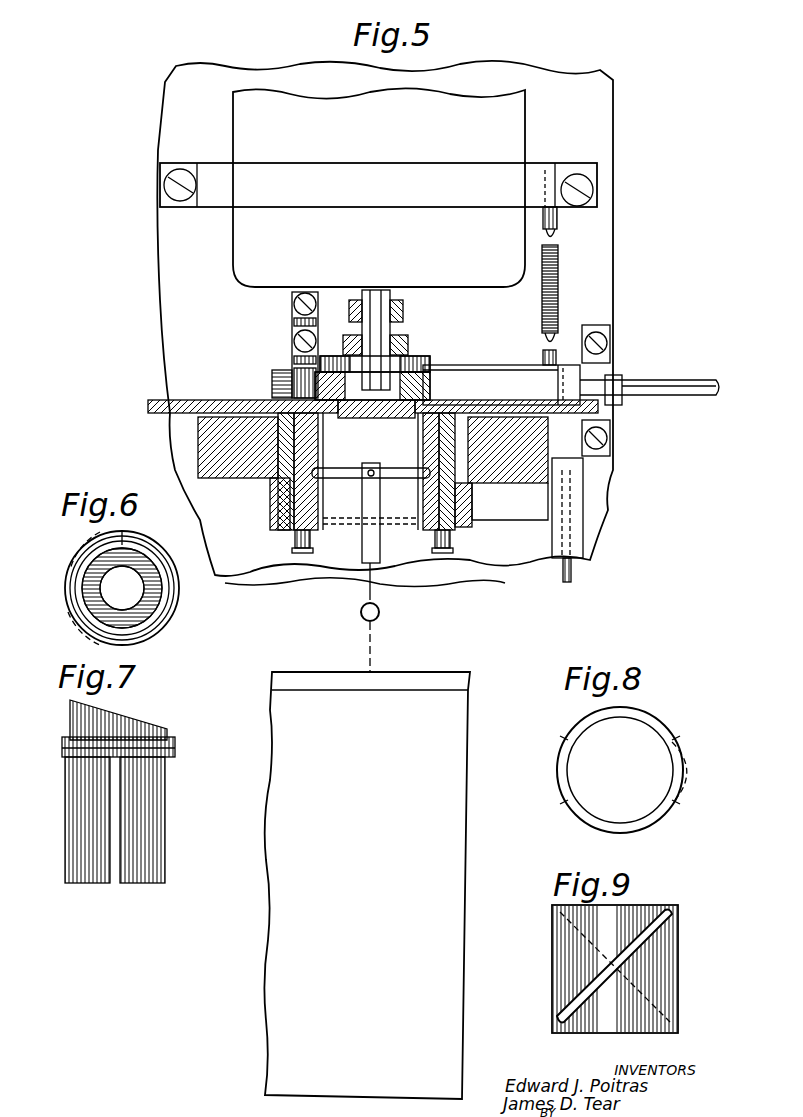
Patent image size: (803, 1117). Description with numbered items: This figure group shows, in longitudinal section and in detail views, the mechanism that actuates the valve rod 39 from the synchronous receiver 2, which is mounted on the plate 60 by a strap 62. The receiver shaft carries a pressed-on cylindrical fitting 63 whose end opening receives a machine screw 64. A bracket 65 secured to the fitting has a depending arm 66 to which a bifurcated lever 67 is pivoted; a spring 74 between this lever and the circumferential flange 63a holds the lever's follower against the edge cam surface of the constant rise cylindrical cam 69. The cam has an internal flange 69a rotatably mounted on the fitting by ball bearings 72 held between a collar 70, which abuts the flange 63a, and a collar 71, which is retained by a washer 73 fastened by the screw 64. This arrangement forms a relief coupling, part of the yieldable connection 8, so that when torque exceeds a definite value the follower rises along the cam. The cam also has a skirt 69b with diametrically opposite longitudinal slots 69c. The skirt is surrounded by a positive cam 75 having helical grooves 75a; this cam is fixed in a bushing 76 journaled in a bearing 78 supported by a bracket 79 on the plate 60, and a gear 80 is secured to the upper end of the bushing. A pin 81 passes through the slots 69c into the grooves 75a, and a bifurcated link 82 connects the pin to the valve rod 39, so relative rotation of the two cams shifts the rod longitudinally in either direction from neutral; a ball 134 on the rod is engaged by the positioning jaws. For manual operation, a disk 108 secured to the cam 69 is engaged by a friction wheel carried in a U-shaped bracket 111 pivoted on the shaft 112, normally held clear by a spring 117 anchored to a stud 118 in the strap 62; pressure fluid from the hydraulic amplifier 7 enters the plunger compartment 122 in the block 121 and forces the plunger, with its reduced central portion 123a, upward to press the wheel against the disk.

In FIG. 5, the synchronous receiver 2 is at (379, 187).
In FIG. 5, the strap 62 is at (378, 185).
In FIG. 5, the plate 60 is at (613, 222).
In FIG. 5, the stud 118 is at (560, 214).
In FIG. 5, the spring 117 is at (560, 298).
In FIG. 5, the bracket 65 is at (296, 310).
In FIG. 5, the depending arm 66 is at (350, 326).
In FIG. 5, the yieldable connection 8 is at (285, 346).
In FIG. 5, the cylindrical fitting 63 is at (398, 338).
In FIG. 5, the circumferential flange 63a is at (330, 374).
In FIG. 5, the bifurcated lever 67 is at (410, 345).
In FIG. 5, the U-shaped bracket 111 is at (432, 368).
In FIG. 5, the spring 74 is at (405, 362).
In FIG. 5, the collar 70 is at (440, 366).
In FIG. 5, the cylindrical cam 69 is at (436, 382).
In FIG. 6, the cylindrical cam 69 is at (178, 592).
In FIG. 7, the cylindrical cam 69 is at (168, 734).
In FIG. 5, the internal flange 69a is at (318, 384).
In FIG. 6, the internal flange 69a is at (122, 588).
In FIG. 7, the internal flange 69a is at (130, 735).
In FIG. 5, the skirt 69b is at (355, 525).
In FIG. 7, the skirt 69b is at (150, 820).
In FIG. 5, the longitudinal slots 69c is at (325, 462).
In FIG. 6, the longitudinal slots 69c is at (79, 583).
In FIG. 7, the longitudinal slots 69c is at (112, 805).
In FIG. 5, the collar 71 is at (430, 386).
In FIG. 5, the disk 108 is at (470, 400).
In FIG. 5, the shaft 112 is at (668, 383).
In FIG. 5, the gear 80 is at (150, 392).
In FIG. 5, the ball bearings 72 is at (290, 385).
In FIG. 5, the bracket 79 is at (225, 445).
In FIG. 5, the washer 73 is at (360, 420).
In FIG. 5, the machine screw 64 is at (389, 442).
In FIG. 5, the positive cam 75 is at (290, 514).
In FIG. 8, the positive cam 75 is at (622, 710).
In FIG. 9, the positive cam 75 is at (573, 960).
In FIG. 5, the helical grooves 75a is at (300, 465).
In FIG. 8, the helical grooves 75a is at (700, 771).
In FIG. 9, the helical grooves 75a is at (640, 950).
In FIG. 5, the bushing 76 is at (272, 495).
In FIG. 5, the bearing 78 is at (462, 527).
In FIG. 5, the pin 81 is at (355, 478).
In FIG. 5, the bifurcated link 82 is at (380, 494).
In FIG. 5, the plunger compartment 122 is at (572, 520).
In FIG. 5, the block 121 is at (548, 545).
In FIG. 5, the reduced central portion 123a is at (571, 578).
In FIG. 5, the valve rod 39 is at (368, 570).
In FIG. 5, the ball 134 is at (380, 612).
In FIG. 5, the hydraulic amplifier 7 is at (468, 838).